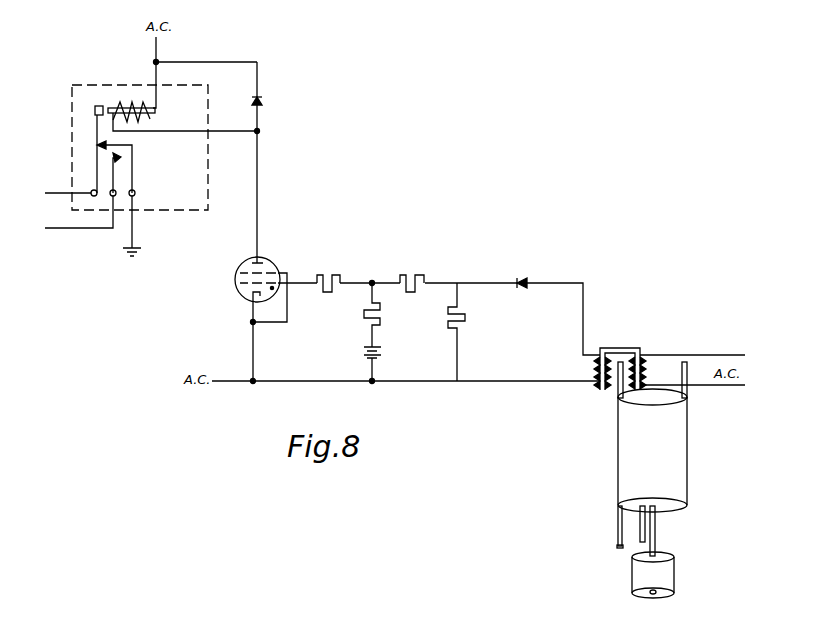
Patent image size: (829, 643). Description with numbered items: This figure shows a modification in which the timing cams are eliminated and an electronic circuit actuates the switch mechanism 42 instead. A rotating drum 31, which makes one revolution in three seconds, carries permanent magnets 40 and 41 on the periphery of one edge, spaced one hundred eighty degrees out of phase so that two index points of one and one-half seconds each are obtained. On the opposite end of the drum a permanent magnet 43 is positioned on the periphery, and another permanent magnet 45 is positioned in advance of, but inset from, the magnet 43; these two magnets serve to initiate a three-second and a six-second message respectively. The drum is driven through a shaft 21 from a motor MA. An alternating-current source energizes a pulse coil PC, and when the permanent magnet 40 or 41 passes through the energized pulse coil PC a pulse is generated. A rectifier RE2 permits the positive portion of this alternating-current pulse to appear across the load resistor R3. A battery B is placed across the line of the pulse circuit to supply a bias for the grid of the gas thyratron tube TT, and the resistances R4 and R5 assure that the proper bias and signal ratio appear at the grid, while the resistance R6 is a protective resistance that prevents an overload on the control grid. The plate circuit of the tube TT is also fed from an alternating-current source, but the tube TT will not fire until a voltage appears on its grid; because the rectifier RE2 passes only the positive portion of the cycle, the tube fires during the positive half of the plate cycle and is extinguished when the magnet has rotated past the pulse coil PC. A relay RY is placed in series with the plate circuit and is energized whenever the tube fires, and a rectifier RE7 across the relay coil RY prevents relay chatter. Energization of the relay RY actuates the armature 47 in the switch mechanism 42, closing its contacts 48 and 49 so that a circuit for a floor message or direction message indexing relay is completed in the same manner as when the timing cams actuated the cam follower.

The relay RY is at (156, 110).
The rectifier RE7 is at (262, 100).
The switch mechanism 42 is at (72, 160).
The armature 47 is at (95, 105).
The relay contact 48 is at (95, 139).
The relay contact 49 is at (120, 159).
The gas thyratron tube TT is at (240, 262).
The protective resistance R6 is at (325, 275).
The resistance R5 is at (410, 270).
The resistance R4 is at (382, 313).
The load resistor R3 is at (467, 313).
The battery B is at (386, 353).
The rectifier RE2 is at (524, 271).
The pulse coil PC is at (621, 348).
The permanent magnet 40 is at (616, 396).
The permanent magnet 41 is at (689, 395).
The rotating drum 31 is at (616, 496).
The permanent magnet 43 is at (617, 529).
The permanent magnet 45 is at (639, 543).
The shaft 21 is at (657, 546).
The motor MA is at (653, 575).